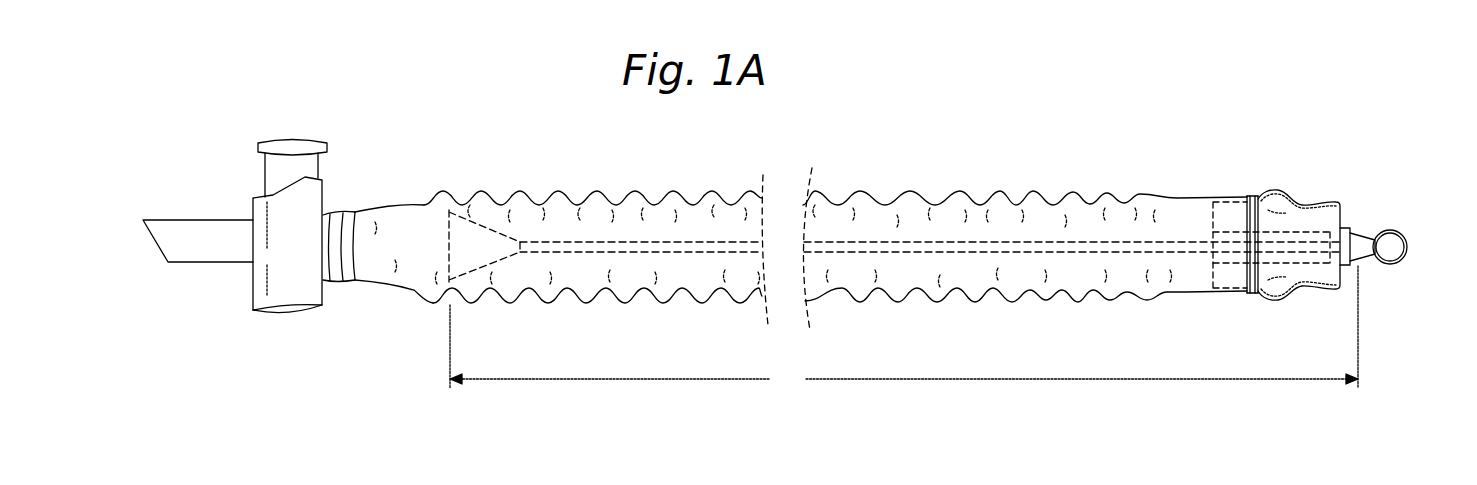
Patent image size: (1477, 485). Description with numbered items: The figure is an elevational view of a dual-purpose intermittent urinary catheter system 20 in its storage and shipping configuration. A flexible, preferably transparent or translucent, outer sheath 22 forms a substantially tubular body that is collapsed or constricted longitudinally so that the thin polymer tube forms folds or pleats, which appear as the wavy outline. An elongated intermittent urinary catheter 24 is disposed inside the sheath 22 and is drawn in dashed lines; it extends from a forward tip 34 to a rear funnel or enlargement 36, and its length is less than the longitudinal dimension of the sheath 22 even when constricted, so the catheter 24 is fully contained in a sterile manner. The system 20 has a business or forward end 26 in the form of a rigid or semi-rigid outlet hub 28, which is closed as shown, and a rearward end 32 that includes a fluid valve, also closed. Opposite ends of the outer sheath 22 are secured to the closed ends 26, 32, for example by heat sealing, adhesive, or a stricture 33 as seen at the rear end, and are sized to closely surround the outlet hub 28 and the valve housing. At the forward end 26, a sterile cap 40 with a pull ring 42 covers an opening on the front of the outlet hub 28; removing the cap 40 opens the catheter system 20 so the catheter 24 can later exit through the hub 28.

The dual-purpose intermittent urinary catheter system 20 is at (499, 120).
The outer sheath 22 is at (613, 194).
The intermittent urinary catheter 24 is at (873, 242).
The forward end 26 is at (1267, 170).
The outlet hub 28 is at (1308, 203).
The rearward end 32 is at (238, 123).
The stricture 33 is at (350, 212).
The forward tip 34 is at (1332, 238).
The rear funnel 36 is at (490, 230).
The sterile cap 40 is at (1360, 250).
The pull ring 42 is at (1387, 225).